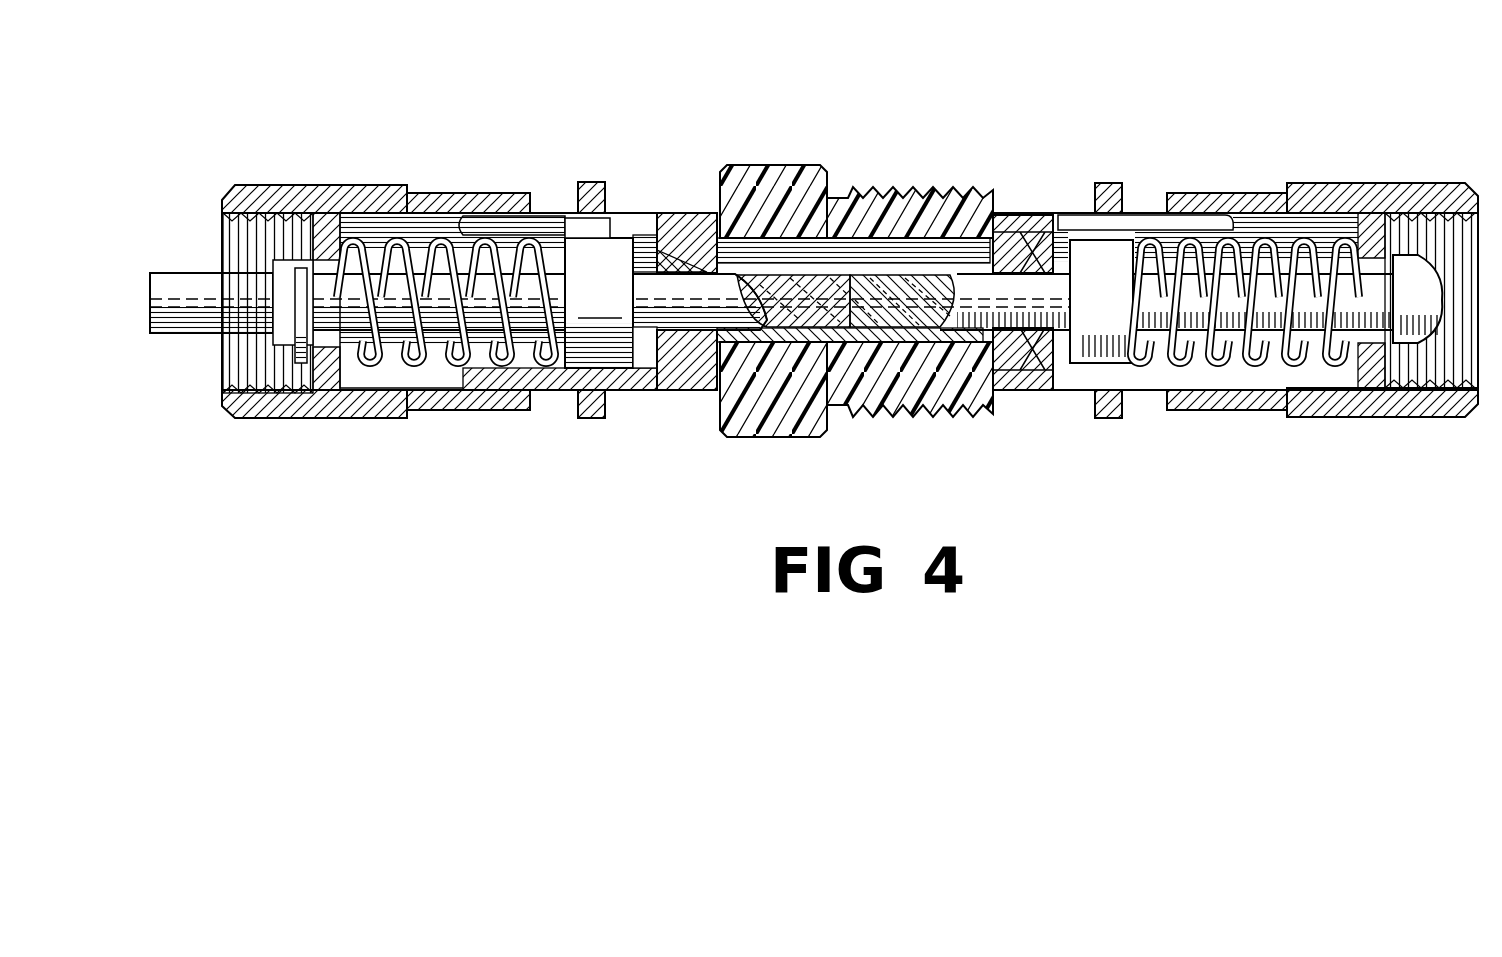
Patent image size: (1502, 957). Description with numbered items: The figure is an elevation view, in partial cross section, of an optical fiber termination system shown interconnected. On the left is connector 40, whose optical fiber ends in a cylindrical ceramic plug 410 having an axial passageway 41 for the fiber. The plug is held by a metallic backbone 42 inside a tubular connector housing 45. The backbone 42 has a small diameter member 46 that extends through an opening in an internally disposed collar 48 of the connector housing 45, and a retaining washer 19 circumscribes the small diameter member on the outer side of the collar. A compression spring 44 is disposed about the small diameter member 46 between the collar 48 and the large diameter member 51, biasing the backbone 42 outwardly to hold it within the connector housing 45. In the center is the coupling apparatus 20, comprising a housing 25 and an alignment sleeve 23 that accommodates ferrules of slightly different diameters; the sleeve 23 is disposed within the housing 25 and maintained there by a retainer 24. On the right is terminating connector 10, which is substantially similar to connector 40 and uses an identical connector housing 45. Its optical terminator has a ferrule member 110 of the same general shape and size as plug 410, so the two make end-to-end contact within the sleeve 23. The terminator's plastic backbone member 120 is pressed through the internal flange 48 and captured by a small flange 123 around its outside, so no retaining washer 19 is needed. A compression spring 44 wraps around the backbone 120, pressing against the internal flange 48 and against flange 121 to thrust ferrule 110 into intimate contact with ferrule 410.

The terminating connector 10 is at (1212, 130).
The retaining washer 19 is at (298, 363).
The coupling apparatus 20 is at (767, 128).
The alignment sleeve 23 is at (927, 360).
The retainer 24 is at (1023, 350).
The housing 25 is at (817, 170).
The connector 40 is at (400, 128).
The axial passageway 41 is at (828, 303).
The backbone 42 is at (480, 355).
The compression spring 44 is at (418, 358).
The connector housing 45 is at (490, 200).
The small diameter member 46 is at (418, 267).
The internal collar 48 is at (330, 242).
The large diameter member 51 is at (577, 357).
The ferrule member 110 is at (990, 275).
The backbone member 120 is at (1215, 350).
The flange 121 is at (1123, 363).
The small flange 123 is at (1400, 347).
The plug 410 is at (730, 277).